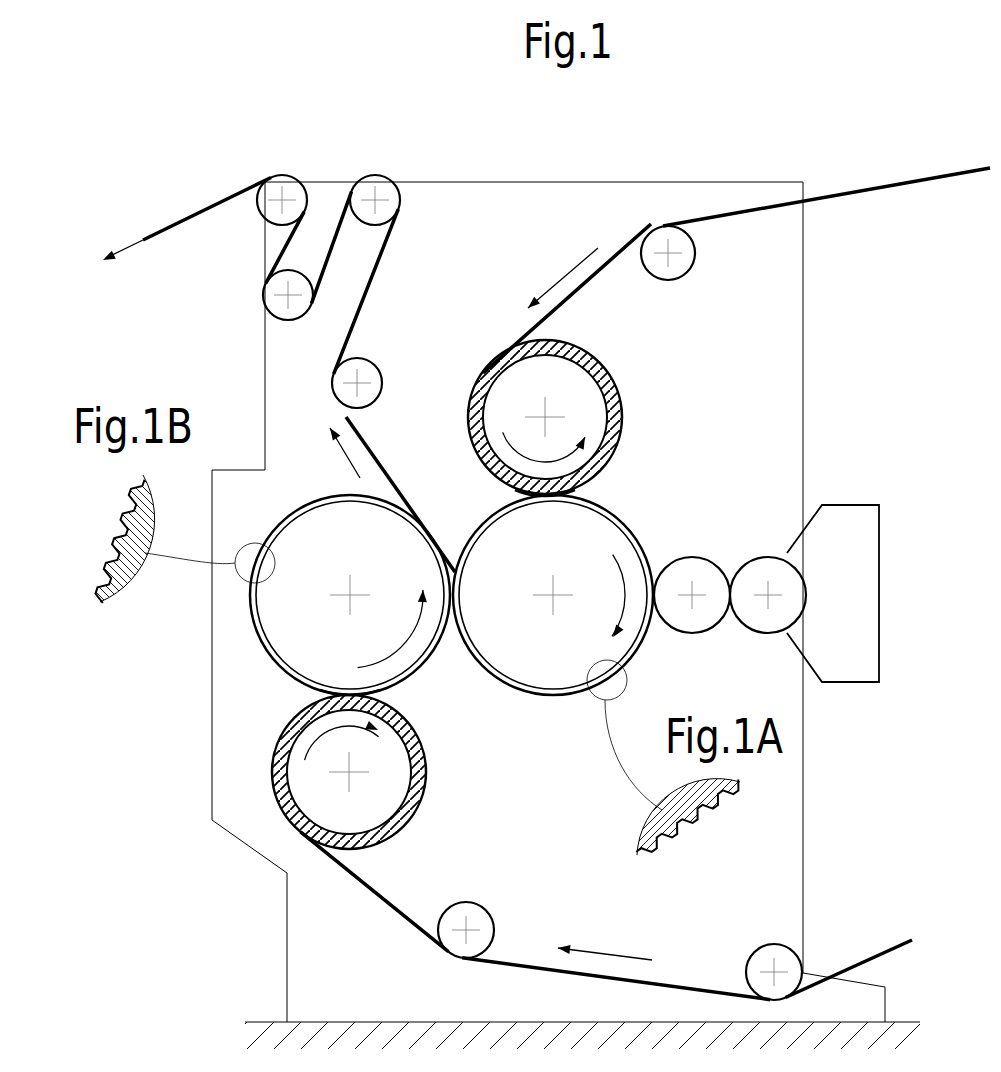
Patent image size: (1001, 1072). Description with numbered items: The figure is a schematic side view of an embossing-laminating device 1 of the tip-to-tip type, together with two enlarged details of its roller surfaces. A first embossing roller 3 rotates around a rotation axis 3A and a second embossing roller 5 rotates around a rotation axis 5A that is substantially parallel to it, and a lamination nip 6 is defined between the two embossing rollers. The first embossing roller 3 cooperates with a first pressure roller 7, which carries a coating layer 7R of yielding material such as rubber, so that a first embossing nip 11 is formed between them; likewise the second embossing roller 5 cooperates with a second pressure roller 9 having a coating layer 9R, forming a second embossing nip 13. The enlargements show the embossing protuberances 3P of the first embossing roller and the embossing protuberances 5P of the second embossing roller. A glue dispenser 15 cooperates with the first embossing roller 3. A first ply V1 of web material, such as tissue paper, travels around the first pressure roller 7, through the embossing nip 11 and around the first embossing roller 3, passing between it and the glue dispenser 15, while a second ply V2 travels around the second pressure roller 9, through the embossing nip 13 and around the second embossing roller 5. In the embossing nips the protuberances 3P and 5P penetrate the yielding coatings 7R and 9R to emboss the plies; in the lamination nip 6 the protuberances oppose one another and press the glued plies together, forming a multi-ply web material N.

In FIG. 1, the embossing-laminating device 1 is at (817, 332).
In FIG. 1, the multi-ply web material N is at (193, 205).
In FIG. 1, the first ply of web material V1 is at (888, 184).
In FIG. 1, the second ply of web material V2 is at (865, 958).
In FIG. 1, the first embossing roller 3 is at (533, 670).
In FIG. 1A, the first embossing roller 3 is at (672, 825).
In FIG. 1, the rotation axis of first embossing roller 3A is at (552, 595).
In FIG. 1A, the embossing protuberances of first embossing roller 3P is at (712, 825).
In FIG. 1, the second embossing roller 5 is at (333, 517).
In FIG. 1B, the second embossing roller 5 is at (125, 570).
In FIG. 1, the rotation axis of second embossing roller 5A is at (352, 595).
In FIG. 1B, the embossing protuberances of second embossing roller 5P is at (107, 542).
In FIG. 1, the lamination nip 6 is at (452, 553).
In FIG. 1, the first pressure roller 7 is at (588, 422).
In FIG. 1, the coating layer of first pressure roller 7R is at (577, 348).
In FIG. 1, the second pressure roller 9 is at (363, 813).
In FIG. 1, the coating layer of second pressure roller 9R is at (417, 770).
In FIG. 1, the first embossing nip 11 is at (580, 490).
In FIG. 1, the second embossing nip 13 is at (305, 695).
In FIG. 1, the glue dispenser 15 is at (877, 497).